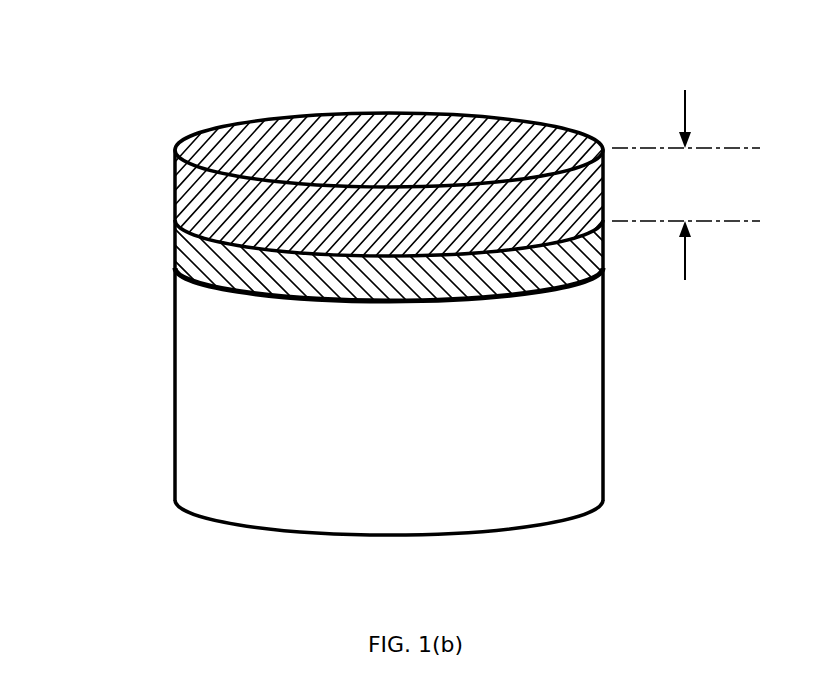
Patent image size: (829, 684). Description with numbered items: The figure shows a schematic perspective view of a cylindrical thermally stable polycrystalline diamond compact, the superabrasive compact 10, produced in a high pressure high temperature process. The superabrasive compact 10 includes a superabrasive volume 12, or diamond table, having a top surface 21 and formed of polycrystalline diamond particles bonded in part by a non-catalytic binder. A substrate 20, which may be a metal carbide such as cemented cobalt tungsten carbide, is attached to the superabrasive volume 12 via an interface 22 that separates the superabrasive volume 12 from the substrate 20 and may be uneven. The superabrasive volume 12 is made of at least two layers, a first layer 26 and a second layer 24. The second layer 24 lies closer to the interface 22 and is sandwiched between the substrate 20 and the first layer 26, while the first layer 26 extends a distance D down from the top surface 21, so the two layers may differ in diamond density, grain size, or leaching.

The superabrasive compact 10 is at (640, 369).
The superabrasive volume 12 is at (607, 186).
The substrate 20 is at (552, 425).
The top surface 21 is at (369, 155).
The interface 22 is at (177, 270).
The second layer 24 is at (295, 282).
The first layer 26 is at (209, 200).